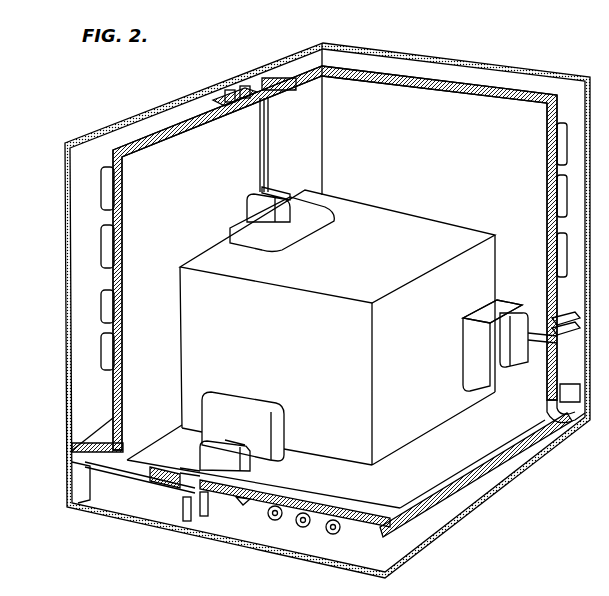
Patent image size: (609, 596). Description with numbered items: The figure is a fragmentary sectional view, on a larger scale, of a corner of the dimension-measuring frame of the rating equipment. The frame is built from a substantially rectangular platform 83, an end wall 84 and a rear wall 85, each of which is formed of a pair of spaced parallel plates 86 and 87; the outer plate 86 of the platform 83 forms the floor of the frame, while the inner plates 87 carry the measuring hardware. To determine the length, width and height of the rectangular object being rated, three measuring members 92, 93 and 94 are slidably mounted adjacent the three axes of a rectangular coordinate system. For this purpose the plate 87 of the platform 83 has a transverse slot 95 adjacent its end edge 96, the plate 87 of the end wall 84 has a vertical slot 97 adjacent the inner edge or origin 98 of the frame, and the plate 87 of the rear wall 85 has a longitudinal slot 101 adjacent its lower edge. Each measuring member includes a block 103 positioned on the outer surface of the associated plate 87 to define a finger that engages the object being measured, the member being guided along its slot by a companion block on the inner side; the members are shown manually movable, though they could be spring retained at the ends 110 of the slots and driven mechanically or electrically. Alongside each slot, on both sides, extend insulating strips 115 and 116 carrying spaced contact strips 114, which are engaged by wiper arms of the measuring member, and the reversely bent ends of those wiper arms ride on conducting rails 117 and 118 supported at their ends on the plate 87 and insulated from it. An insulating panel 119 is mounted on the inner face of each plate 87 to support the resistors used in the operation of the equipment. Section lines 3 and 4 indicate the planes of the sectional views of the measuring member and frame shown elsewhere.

The section line 3- 3 is at (220, 190).
The section line 4- 4 is at (97, 152).
The platform 83 is at (547, 438).
The end wall 84 is at (143, 267).
The rear wall 85 is at (415, 105).
The plate 86 is at (130, 122).
The plate 87 is at (135, 215).
The measuring member 92 is at (468, 353).
The measuring member 93 is at (249, 395).
The measuring member 94 is at (300, 222).
The transverse slot 95 is at (195, 470).
The end edge 96 is at (147, 446).
The vertical slot 97 is at (260, 136).
The inner edge or origin 98 is at (325, 126).
The longitudinal slot 101 is at (540, 318).
The block 103 is at (485, 305).
The ends of slots 110 is at (275, 83).
The contact strips 114 is at (160, 497).
The insulating strip 115 is at (295, 78).
The insulating strip 116 is at (217, 110).
The conducting rail 117 is at (250, 90).
The conducting rail 118 is at (230, 97).
The insulating panel 119 is at (163, 128).